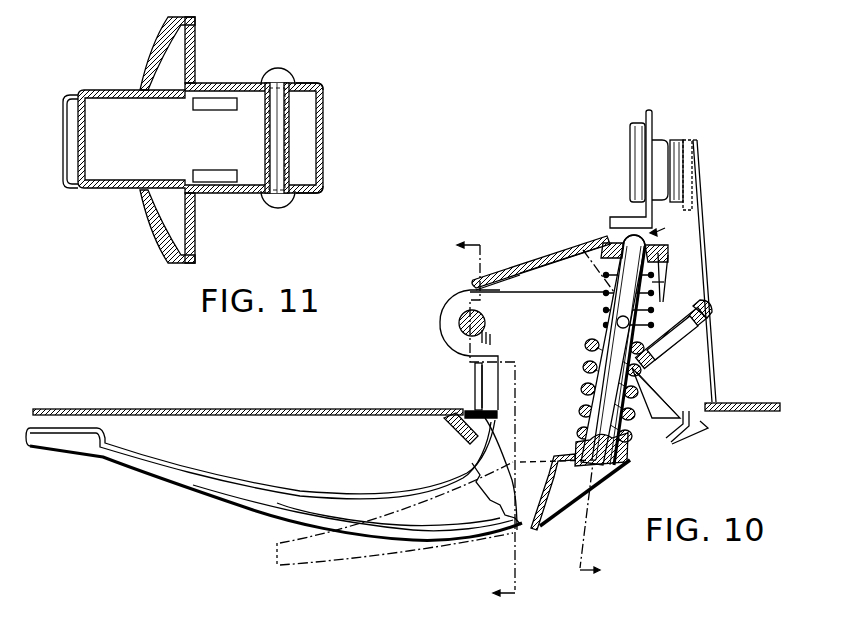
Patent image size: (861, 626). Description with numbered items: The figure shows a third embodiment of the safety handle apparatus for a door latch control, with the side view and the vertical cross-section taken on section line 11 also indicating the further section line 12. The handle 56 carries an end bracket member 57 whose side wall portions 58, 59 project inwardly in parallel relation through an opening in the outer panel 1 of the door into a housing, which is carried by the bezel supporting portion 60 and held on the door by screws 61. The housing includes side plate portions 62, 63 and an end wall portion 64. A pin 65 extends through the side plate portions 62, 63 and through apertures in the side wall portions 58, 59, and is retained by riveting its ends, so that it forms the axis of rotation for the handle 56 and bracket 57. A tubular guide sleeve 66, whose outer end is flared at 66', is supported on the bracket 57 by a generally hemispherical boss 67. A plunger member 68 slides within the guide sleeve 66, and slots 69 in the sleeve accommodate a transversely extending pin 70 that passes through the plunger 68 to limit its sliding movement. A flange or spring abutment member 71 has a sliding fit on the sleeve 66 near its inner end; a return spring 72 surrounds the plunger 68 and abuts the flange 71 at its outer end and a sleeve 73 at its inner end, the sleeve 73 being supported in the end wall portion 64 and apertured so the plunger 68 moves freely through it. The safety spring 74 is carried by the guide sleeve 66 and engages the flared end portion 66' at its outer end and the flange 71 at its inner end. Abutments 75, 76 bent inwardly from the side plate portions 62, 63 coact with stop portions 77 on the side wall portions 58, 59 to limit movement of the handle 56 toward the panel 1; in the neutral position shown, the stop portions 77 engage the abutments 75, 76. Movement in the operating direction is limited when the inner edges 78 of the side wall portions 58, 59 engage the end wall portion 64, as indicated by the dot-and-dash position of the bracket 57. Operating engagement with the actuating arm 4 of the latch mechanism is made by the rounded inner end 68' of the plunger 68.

In FIG. 10, the outer panel 1 is at (75, 408).
In FIG. 10, the arm 4 is at (633, 208).
In FIG. 11, the handle 56 is at (62, 162).
In FIG. 10, the handle 56 is at (258, 492).
In FIG. 10, the end bracket member 57 is at (537, 531).
In FIG. 11, the side wall portion 58 is at (262, 82).
In FIG. 11, the side wall portion 59 is at (268, 203).
In FIG. 10, the side wall portion 59 is at (550, 300).
In FIG. 11, the bezel supporting portion 60 is at (158, 43).
In FIG. 10, the bezel supporting portion 60 is at (455, 430).
In FIG. 10, the screws 61 is at (705, 358).
In FIG. 11, the side plate portion 62 is at (306, 84).
In FIG. 11, the side plate portion 63 is at (302, 196).
In FIG. 10, the side plate portion 63 is at (547, 273).
In FIG. 11, the end wall portion 64 is at (324, 152).
In FIG. 10, the end wall portion 64 is at (557, 257).
In FIG. 11, the pin 65 is at (292, 118).
In FIG. 10, the pin 65 is at (458, 322).
In FIG. 10, the tubular guide sleeve 66 is at (591, 390).
In FIG. 10, the flared end portion 66' is at (602, 454).
In FIG. 10, the hemispherical projection or boss 67 is at (608, 466).
In FIG. 10, the plunger member 68 is at (659, 350).
In FIG. 10, the rounded inner end 68' is at (594, 230).
In FIG. 10, the slots 69 is at (647, 318).
In FIG. 10, the pin 70 is at (605, 313).
In FIG. 10, the flange or spring abutment member 71 is at (595, 332).
In FIG. 10, the return spring 72 is at (663, 282).
In FIG. 10, the sleeve 73 is at (662, 267).
In FIG. 10, the safety spring 74 is at (665, 380).
In FIG. 11, the abutment 75 is at (218, 98).
In FIG. 11, the abutment 76 is at (219, 183).
In FIG. 10, the abutment 76 is at (475, 375).
In FIG. 10, the stop portions 77 is at (482, 397).
In FIG. 10, the inner edges 78 is at (515, 287).
In FIG. 10, the section line 11- 11 is at (469, 424).
In FIG. 10, the section line 12- 12 is at (632, 400).